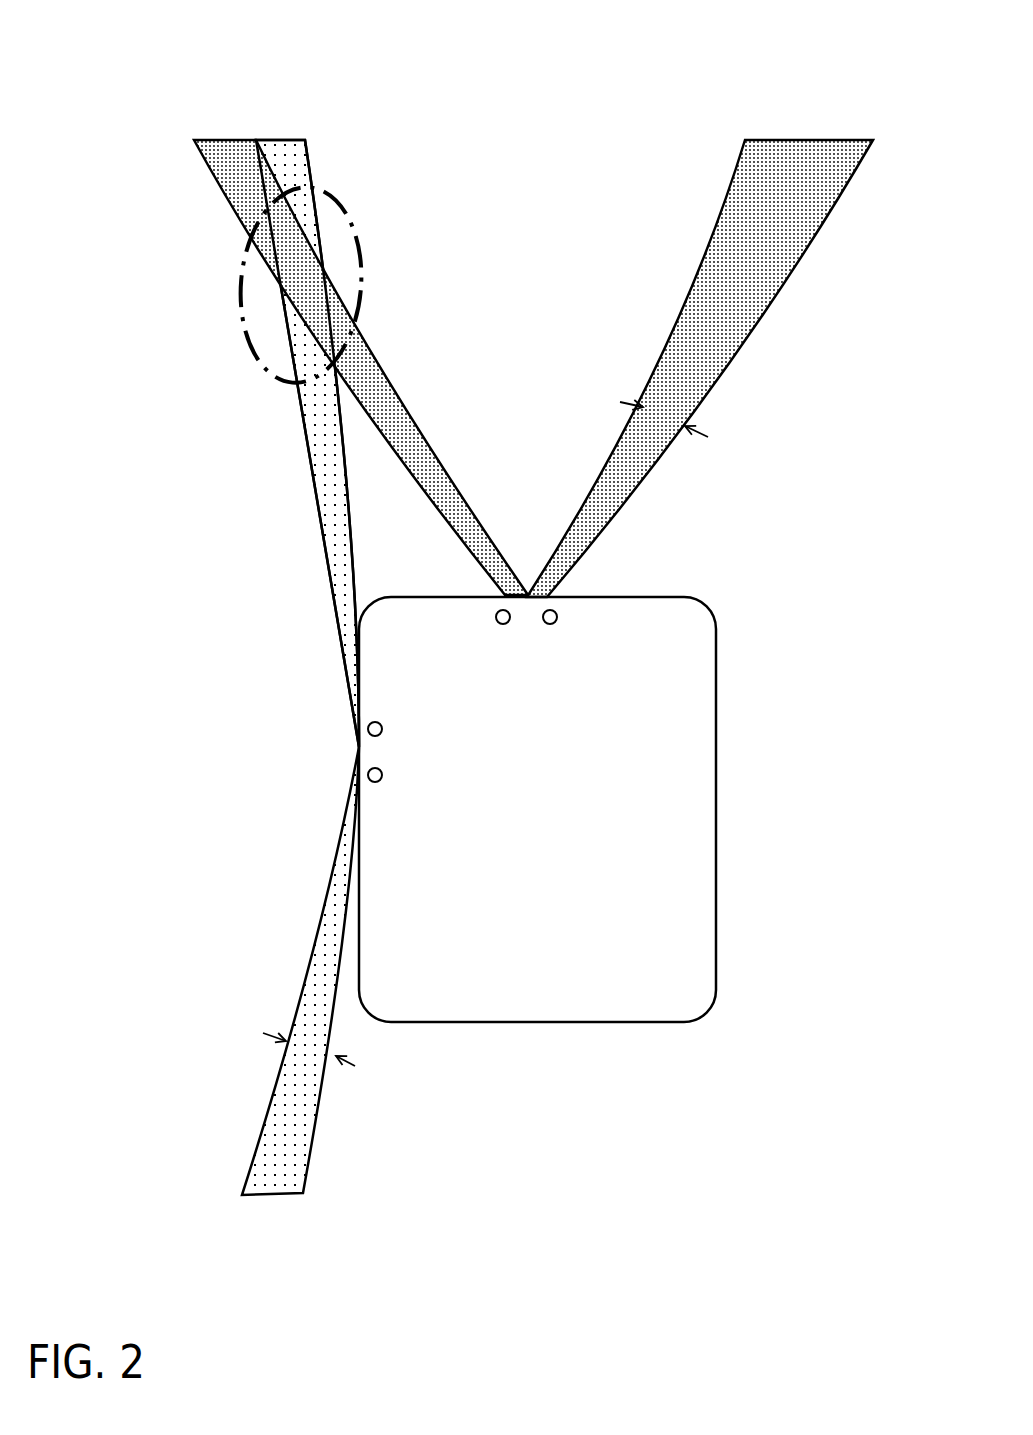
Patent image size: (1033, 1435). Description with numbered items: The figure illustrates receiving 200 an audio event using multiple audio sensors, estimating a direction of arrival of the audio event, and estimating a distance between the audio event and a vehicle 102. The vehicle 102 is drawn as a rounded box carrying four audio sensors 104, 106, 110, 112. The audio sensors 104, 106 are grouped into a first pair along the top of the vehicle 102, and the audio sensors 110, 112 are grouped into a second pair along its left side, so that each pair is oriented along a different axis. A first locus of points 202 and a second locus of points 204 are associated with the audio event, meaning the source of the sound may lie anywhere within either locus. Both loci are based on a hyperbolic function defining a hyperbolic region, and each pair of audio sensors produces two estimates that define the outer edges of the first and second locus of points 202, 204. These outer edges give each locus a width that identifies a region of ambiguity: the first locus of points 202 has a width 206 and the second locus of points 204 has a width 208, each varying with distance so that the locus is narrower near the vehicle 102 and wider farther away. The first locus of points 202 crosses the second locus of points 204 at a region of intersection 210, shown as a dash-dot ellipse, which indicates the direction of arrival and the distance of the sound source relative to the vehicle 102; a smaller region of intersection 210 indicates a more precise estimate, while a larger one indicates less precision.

The receiving an audio event 200 is at (104, 50).
The vehicle 102 is at (594, 1002).
The audio sensor 104 is at (498, 623).
The audio sensor 106 is at (556, 623).
The audio sensor 110 is at (382, 731).
The audio sensor 112 is at (380, 781).
The first locus of points 202 is at (320, 508).
The second locus of points 204 is at (396, 410).
The width 206 is at (331, 1060).
The width 208 is at (686, 428).
The region of intersection 210 is at (351, 249).